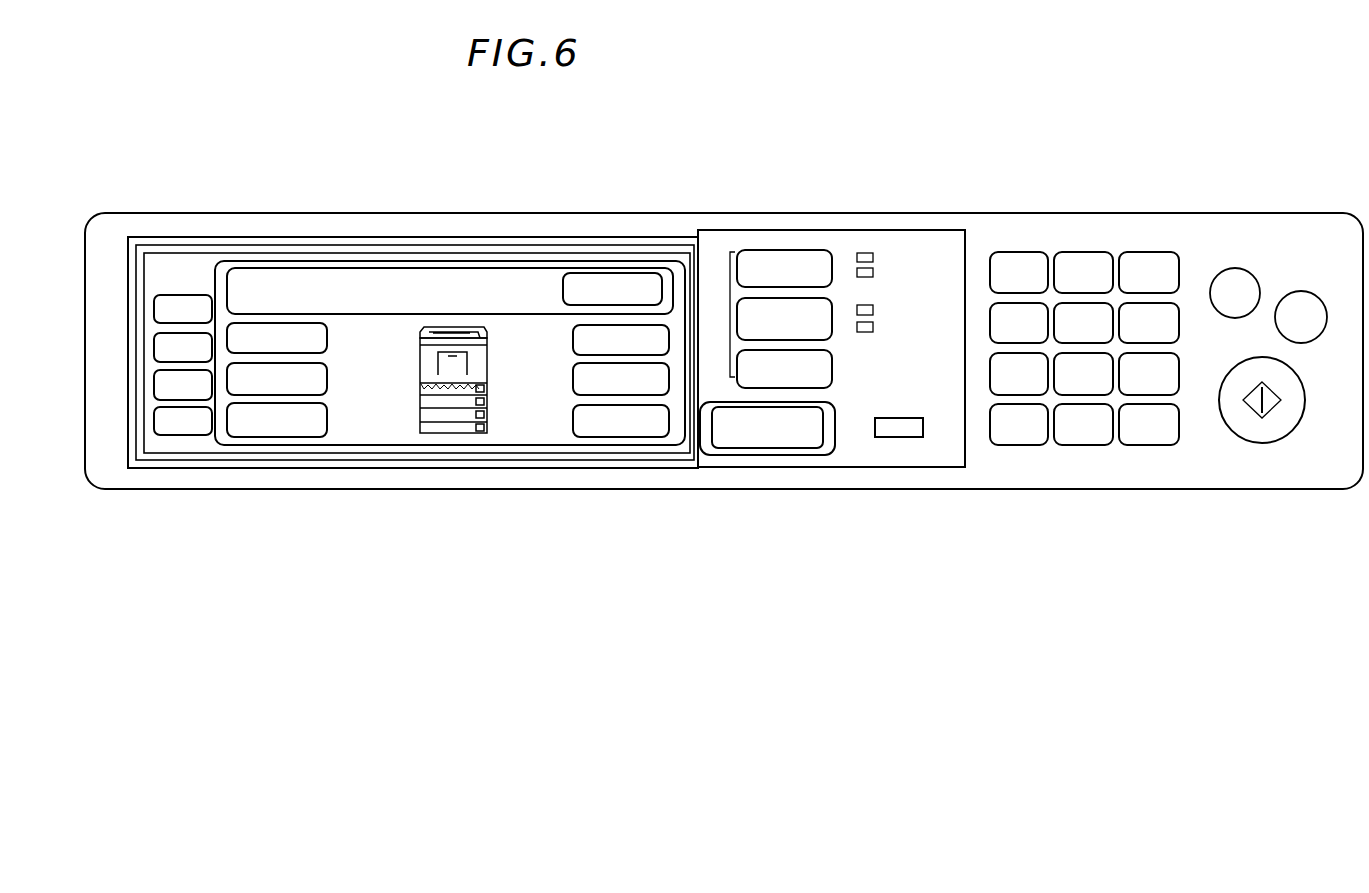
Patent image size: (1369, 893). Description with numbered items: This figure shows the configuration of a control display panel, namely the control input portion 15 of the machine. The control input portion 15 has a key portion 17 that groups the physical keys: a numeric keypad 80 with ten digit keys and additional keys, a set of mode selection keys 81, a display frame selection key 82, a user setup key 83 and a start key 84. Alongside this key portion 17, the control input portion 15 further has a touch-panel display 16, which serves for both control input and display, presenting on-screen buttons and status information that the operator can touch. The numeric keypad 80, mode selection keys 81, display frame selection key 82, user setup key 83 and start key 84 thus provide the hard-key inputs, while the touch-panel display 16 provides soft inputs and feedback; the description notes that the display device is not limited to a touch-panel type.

The control input portion 15 is at (634, 213).
The touch-panel display 16 is at (407, 457).
The key portion 17 is at (1021, 416).
The numeric keypad 80 is at (1080, 446).
The mode selection keys 81 is at (730, 306).
The display frame selection key 82 is at (762, 452).
The user setup key 83 is at (897, 437).
The start key 84 is at (1257, 443).